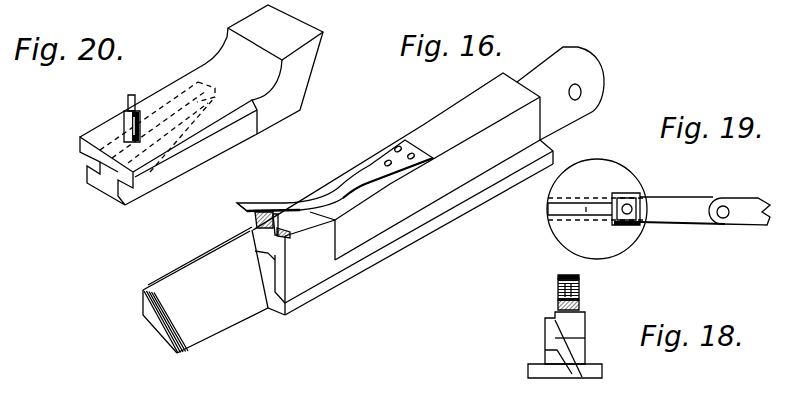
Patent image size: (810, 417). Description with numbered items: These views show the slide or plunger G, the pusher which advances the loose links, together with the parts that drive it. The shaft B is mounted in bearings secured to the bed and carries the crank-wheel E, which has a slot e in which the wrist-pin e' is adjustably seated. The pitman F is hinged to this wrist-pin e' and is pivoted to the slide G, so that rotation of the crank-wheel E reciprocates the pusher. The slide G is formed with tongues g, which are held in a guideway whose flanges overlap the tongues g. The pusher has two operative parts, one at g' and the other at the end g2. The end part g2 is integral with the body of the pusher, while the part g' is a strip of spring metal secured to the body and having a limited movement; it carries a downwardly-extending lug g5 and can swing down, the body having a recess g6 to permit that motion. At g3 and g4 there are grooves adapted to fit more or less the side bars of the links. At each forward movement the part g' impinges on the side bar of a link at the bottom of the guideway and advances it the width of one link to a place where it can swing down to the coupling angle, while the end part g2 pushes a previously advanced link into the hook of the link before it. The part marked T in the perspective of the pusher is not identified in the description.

In FIG. 20, the pin T is at (153, 84).
In FIG. 16, the slide or plunger G is at (428, 153).
In FIG. 19, the slide or plunger G is at (742, 205).
In FIG. 18, the slide or plunger G is at (580, 338).
In FIG. 16, the tongues g is at (348, 246).
In FIG. 18, the tongues g is at (571, 378).
In FIG. 16, the spring-metal part g' is at (335, 175).
In FIG. 18, the spring-metal part g' is at (554, 266).
In FIG. 16, the end part g2 is at (193, 334).
In FIG. 16, the groove g3 is at (264, 211).
In FIG. 18, the groove g3 is at (558, 284).
In FIG. 16, the groove g4 is at (163, 338).
In FIG. 18, the groove g4 is at (572, 375).
In FIG. 16, the downwardly-extending lug g5 is at (255, 227).
In FIG. 18, the downwardly-extending lug g5 is at (558, 300).
In FIG. 16, the recess g6 is at (277, 253).
In FIG. 19, the crank-wheel E is at (618, 177).
In FIG. 19, the slot e is at (582, 210).
In FIG. 19, the wrist-pin e' is at (652, 193).
In FIG. 19, the shaft B is at (599, 219).
In FIG. 19, the pitman F is at (697, 219).